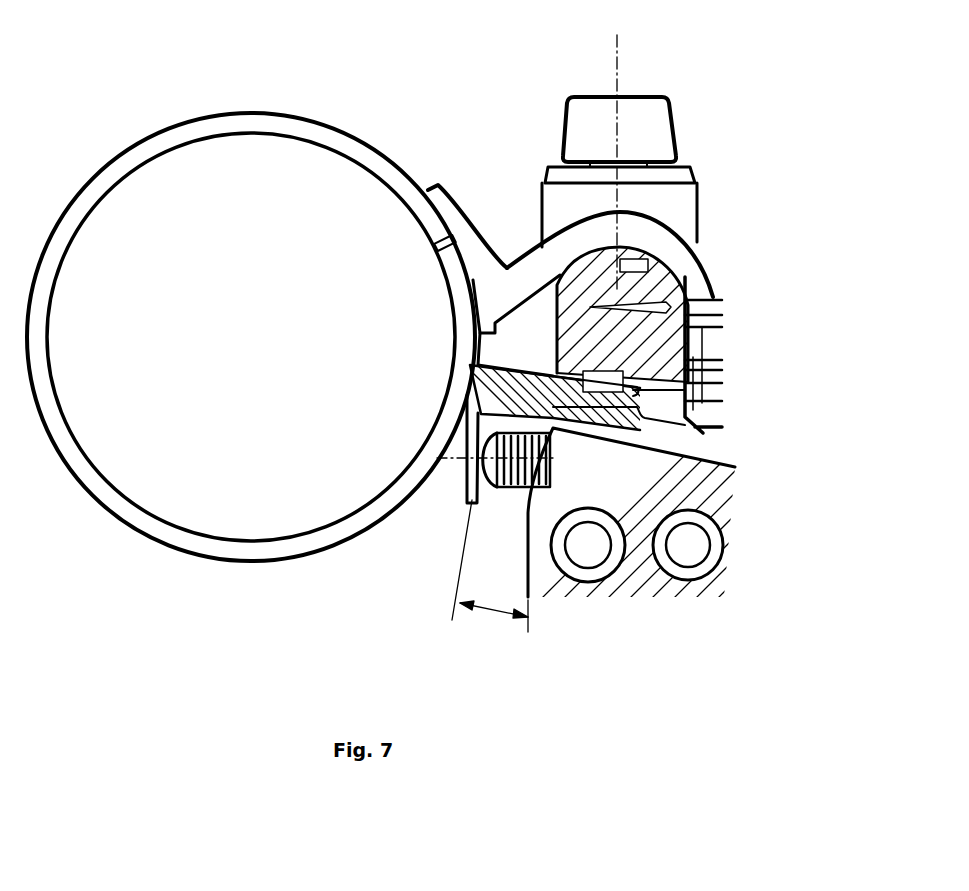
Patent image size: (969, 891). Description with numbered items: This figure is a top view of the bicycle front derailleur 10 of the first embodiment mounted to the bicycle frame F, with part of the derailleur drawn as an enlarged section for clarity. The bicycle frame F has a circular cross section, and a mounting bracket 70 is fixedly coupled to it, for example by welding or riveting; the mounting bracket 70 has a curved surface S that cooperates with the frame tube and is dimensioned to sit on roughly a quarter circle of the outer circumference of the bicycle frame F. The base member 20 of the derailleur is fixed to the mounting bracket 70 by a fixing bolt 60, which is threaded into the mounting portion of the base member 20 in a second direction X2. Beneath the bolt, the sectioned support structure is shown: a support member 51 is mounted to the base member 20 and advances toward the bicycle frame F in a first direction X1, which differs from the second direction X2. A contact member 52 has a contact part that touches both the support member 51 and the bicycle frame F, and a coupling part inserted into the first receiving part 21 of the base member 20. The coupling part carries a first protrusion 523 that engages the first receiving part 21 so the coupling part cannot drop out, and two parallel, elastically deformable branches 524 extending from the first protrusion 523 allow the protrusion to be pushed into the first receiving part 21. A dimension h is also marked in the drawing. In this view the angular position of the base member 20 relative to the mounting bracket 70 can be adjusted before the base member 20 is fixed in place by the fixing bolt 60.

The bicycle frame F is at (320, 138).
The curved surface S is at (436, 241).
The second direction X2 is at (612, 68).
The fixing bolt 60 is at (630, 112).
The base member 20 is at (680, 257).
The mounting bracket 70 is at (520, 287).
The bicycle front derailleur 10 is at (740, 318).
The first protrusion 523 is at (720, 396).
The branches 524 is at (713, 427).
The first receiving part 21 is at (693, 443).
The support member 51 is at (553, 470).
The contact member 52 is at (457, 452).
The first direction X1 is at (452, 458).
The height dimension h is at (490, 566).